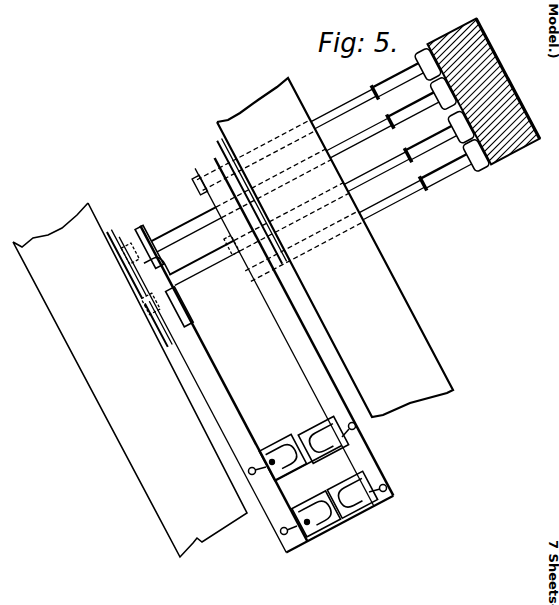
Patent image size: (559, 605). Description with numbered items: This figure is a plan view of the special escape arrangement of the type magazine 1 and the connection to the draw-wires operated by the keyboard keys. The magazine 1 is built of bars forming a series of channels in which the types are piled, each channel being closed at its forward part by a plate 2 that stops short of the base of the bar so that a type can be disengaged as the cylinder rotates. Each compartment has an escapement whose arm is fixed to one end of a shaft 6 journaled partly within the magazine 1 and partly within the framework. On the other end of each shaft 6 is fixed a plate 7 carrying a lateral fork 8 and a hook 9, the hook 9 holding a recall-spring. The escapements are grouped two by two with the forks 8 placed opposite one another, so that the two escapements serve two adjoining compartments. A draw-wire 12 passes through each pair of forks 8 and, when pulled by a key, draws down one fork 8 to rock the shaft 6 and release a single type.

The magazine 1 is at (434, 42).
The plate 2 is at (529, 130).
The shaft 6 is at (437, 186).
The plate 7 is at (250, 347).
The lateral fork 8 is at (343, 490).
The hook 9 is at (312, 479).
The draw-wire 12 is at (275, 461).